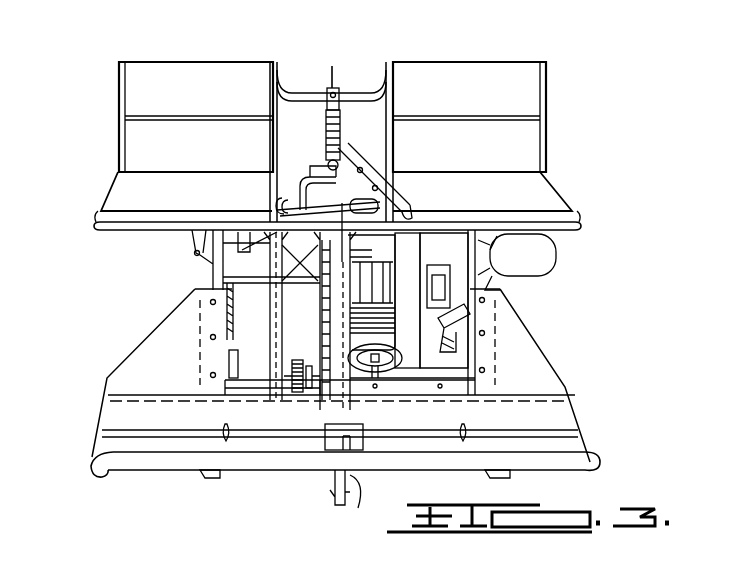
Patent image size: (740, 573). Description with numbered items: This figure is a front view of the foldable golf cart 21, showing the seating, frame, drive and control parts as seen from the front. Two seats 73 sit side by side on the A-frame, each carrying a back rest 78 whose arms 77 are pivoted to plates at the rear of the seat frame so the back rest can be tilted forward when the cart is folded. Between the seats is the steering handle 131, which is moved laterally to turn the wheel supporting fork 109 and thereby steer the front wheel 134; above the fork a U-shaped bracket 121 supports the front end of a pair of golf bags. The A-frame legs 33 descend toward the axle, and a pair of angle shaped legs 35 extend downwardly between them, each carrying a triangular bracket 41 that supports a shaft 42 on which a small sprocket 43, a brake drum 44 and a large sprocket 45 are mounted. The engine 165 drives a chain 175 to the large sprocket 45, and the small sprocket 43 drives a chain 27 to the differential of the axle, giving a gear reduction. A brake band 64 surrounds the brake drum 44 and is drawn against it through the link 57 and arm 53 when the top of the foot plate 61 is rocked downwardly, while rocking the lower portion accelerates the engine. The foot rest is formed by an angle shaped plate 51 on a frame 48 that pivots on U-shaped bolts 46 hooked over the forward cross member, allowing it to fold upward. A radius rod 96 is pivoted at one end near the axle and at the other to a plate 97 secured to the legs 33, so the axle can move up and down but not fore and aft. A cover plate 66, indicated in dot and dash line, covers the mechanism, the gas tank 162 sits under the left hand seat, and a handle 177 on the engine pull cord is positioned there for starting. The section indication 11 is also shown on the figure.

The back rest 78 is at (226, 62).
The arms 77 is at (128, 148).
The U-shaped bracket 121 is at (340, 72).
The wheel supporting fork 109 is at (300, 170).
The seat 73 is at (104, 196).
The wheel 134 is at (307, 190).
The angle shaped legs 35 is at (358, 203).
The steering handle 131 is at (395, 207).
The engine 165 is at (447, 240).
The foldable golf cart 21 is at (610, 226).
The gas tank 162 is at (550, 258).
The legs 33 is at (220, 272).
The handle 177 is at (465, 318).
The plate 97 is at (230, 345).
The radius rod 96 is at (290, 365).
The cover plate 66 is at (555, 383).
The chain 175 is at (328, 378).
The section line 11 is at (333, 259).
The triangular bracket 41 is at (236, 372).
The chain 27 is at (296, 360).
The shaft 42 is at (272, 390).
The small sprocket 43 is at (290, 384).
The brake drum 44 is at (298, 392).
The brake band 64 is at (310, 382).
The large sprocket 45 is at (320, 385).
The angle shaped plate 51 is at (190, 458).
The frame 48 is at (148, 462).
The foot plate 61 is at (367, 430).
The U-shaped bolts 46 is at (467, 430).
The link 57 is at (333, 490).
The arm 53 is at (358, 482).